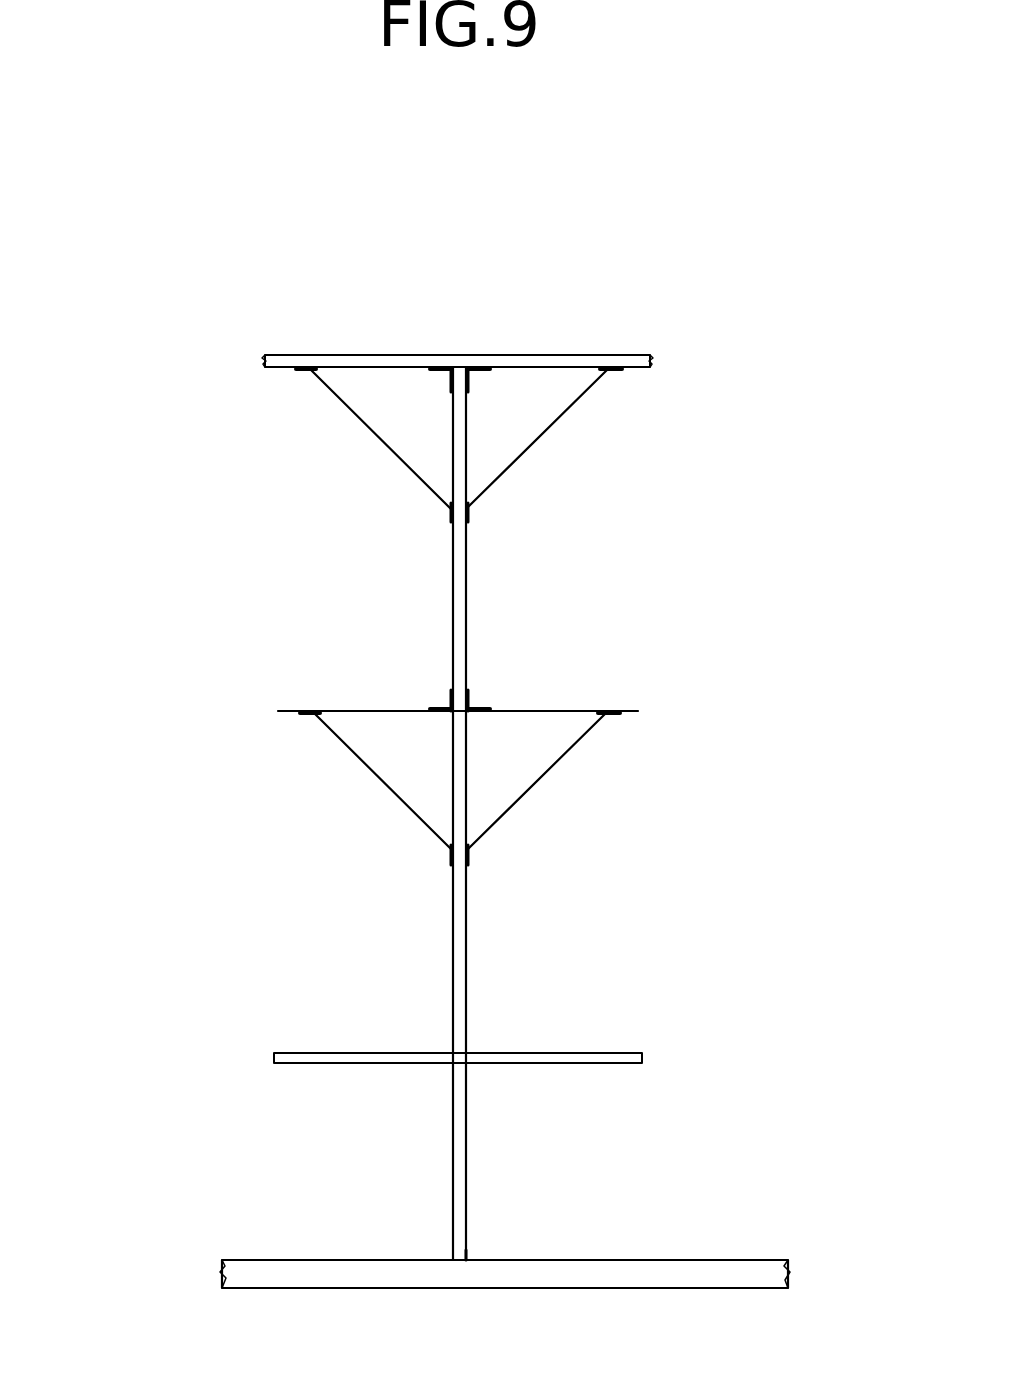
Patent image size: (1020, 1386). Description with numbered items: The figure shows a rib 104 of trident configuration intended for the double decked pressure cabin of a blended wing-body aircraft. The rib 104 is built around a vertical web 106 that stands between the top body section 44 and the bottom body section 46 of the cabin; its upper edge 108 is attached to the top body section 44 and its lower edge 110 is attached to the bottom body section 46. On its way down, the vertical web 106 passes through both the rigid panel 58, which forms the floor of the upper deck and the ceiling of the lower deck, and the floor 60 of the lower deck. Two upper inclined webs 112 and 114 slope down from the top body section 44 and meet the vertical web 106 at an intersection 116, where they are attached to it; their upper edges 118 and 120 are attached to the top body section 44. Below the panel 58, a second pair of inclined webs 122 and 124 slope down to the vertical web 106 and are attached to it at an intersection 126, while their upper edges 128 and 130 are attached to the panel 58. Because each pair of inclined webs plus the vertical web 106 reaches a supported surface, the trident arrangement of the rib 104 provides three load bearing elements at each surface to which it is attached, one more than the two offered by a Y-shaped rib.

The rib 104 is at (165, 318).
The top body section 44 is at (385, 358).
The bottom body section 46 is at (723, 1273).
The rigid panel 58 is at (393, 707).
The floor 60 is at (634, 1052).
The vertical web 106 is at (460, 645).
The upper edge 108 is at (470, 372).
The lower edge 110 is at (468, 1253).
The inclined web 112 is at (393, 453).
The inclined web 114 is at (530, 452).
The intersection 116 is at (470, 515).
The upper edge 118 is at (303, 373).
The upper edge 120 is at (612, 372).
The inclined web 122 is at (397, 797).
The inclined web 124 is at (523, 797).
The intersection 126 is at (470, 857).
The upper edge 128 is at (308, 716).
The upper edge 130 is at (607, 716).